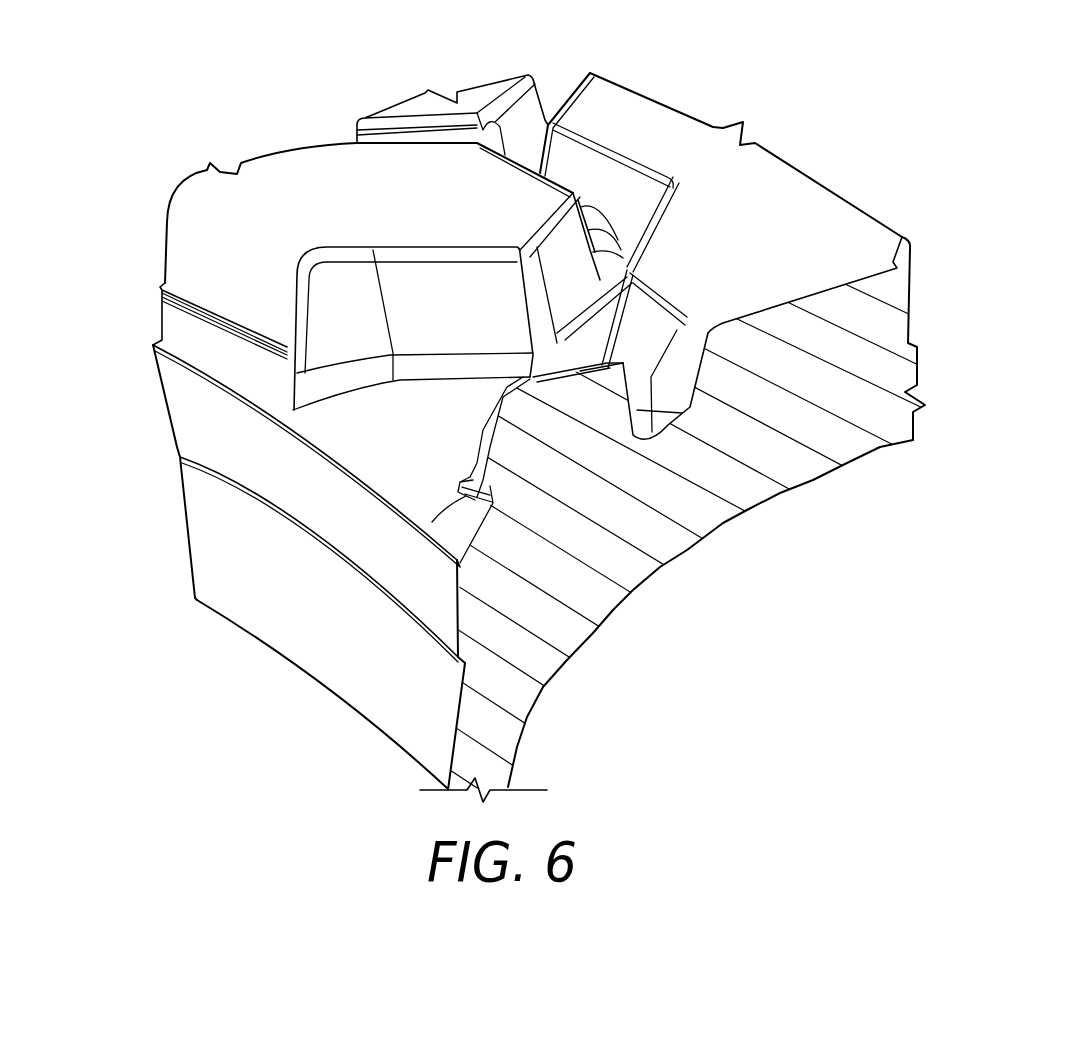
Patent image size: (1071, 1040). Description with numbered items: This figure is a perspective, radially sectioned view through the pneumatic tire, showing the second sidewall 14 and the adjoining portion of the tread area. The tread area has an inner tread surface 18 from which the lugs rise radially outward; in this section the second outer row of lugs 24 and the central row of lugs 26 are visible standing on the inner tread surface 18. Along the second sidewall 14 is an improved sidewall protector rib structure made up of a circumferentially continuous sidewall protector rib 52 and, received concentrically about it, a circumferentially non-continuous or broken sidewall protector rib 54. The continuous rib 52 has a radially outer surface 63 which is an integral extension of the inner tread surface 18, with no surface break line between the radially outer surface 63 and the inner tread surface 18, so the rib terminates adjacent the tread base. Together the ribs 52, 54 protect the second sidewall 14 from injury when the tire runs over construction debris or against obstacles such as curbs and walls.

The second sidewall 14 is at (310, 623).
The inner tread surface 18 is at (390, 447).
The second outer row of lugs 24 is at (303, 158).
The central row of lugs 26 is at (625, 105).
The circumferentially continuous sidewall protector rib 52 is at (190, 417).
The circumferentially non-continuous sidewall protector rib 54 is at (177, 317).
The radially outer surface 63 is at (203, 365).